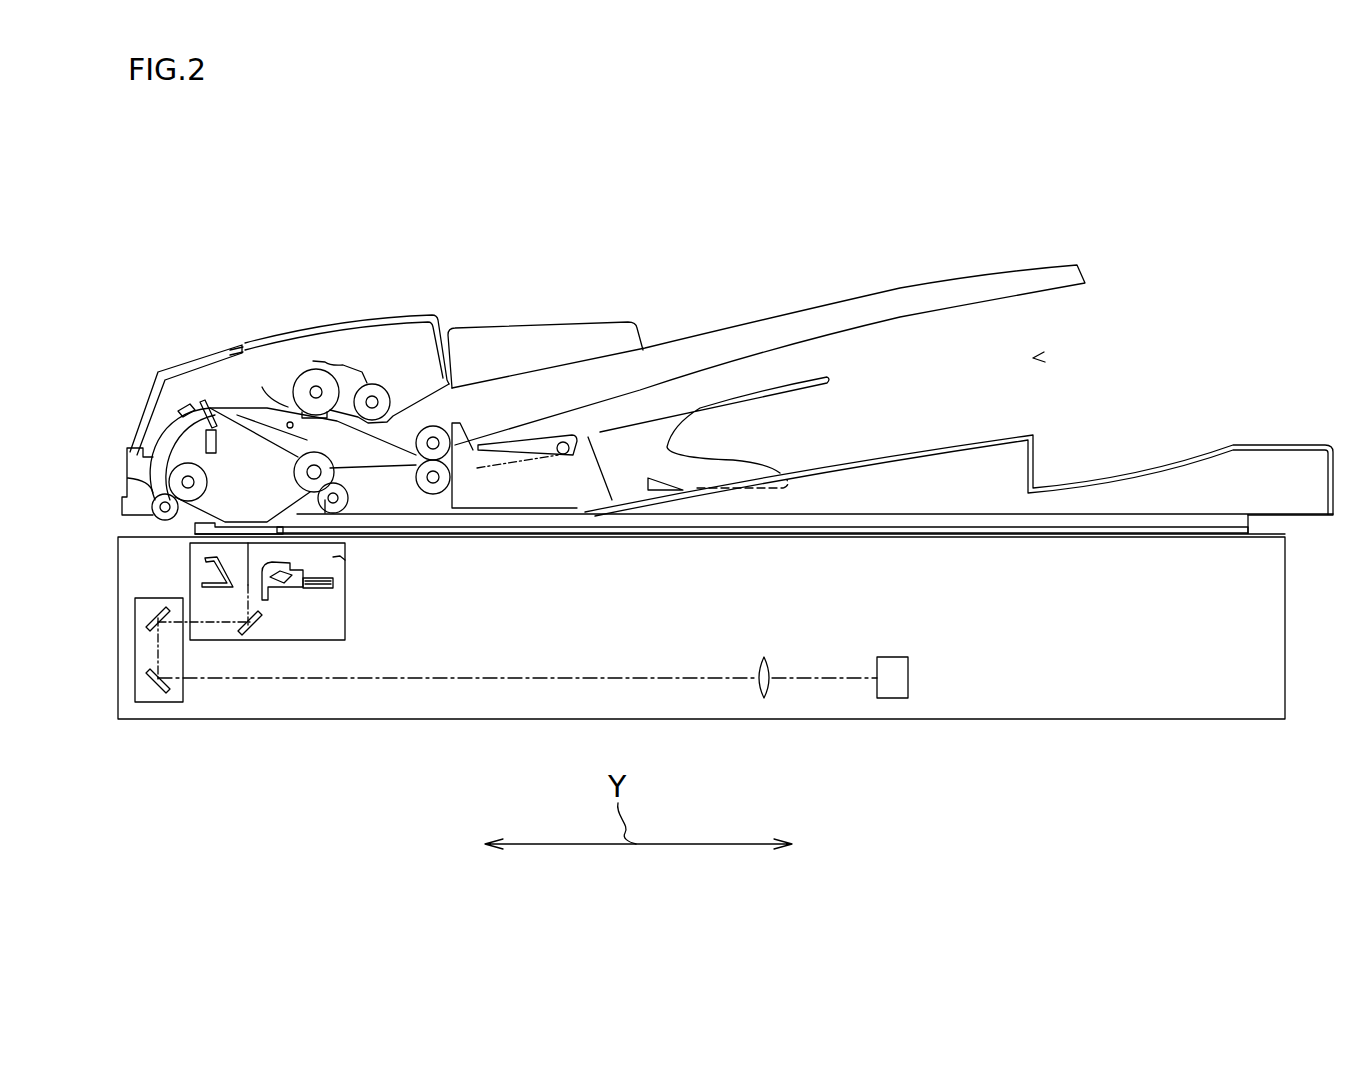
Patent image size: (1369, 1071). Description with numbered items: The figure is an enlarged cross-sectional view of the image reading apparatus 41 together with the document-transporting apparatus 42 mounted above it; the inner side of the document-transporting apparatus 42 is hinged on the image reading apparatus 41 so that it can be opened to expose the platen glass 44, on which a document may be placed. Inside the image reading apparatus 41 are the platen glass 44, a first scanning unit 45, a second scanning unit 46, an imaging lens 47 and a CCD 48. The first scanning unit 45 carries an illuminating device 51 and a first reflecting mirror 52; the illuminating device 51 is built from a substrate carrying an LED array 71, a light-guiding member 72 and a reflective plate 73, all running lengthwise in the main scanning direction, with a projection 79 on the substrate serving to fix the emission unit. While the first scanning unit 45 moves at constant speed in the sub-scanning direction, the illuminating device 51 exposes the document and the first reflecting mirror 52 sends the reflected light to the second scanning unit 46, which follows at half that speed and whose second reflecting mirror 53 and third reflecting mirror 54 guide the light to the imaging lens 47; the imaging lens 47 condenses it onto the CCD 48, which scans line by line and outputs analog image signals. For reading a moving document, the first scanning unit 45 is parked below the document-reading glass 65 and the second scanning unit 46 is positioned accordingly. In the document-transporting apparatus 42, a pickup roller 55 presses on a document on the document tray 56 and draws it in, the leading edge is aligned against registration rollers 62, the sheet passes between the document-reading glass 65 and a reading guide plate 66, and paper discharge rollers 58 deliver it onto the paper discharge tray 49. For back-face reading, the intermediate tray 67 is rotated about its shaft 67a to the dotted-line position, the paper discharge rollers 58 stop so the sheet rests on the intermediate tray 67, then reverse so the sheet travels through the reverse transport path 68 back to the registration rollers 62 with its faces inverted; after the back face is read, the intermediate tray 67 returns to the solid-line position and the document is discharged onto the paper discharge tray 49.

The image reading apparatus 41 is at (1287, 613).
The document-transporting apparatus 42 is at (1033, 358).
The platen glass 44 is at (1005, 529).
The first scanning unit 45 is at (345, 627).
The second scanning unit 46 is at (158, 702).
The imaging lens 47 is at (757, 687).
The charge coupled device (CCD) 48 is at (893, 699).
The paper discharge tray 49 is at (920, 447).
The illuminating device 51 is at (333, 557).
The first reflecting mirror 52 is at (249, 633).
The second reflecting mirror 53 is at (145, 608).
The third reflecting mirror 54 is at (153, 688).
The pickup roller 55 is at (372, 384).
The document tray 56 is at (822, 305).
The paper discharge rollers 58 is at (440, 427).
The registration rollers 62 is at (127, 479).
The document-reading glass 65 is at (235, 522).
The reading guide plate 66 is at (253, 522).
The intermediate tray 67 is at (517, 445).
The shaft 67a is at (563, 442).
The reverse transport path 68 is at (296, 413).
The LED array 71 is at (284, 583).
The light-guiding member 72 is at (287, 556).
The reflective plate 73 is at (207, 570).
The projection 79 is at (1150, 521).